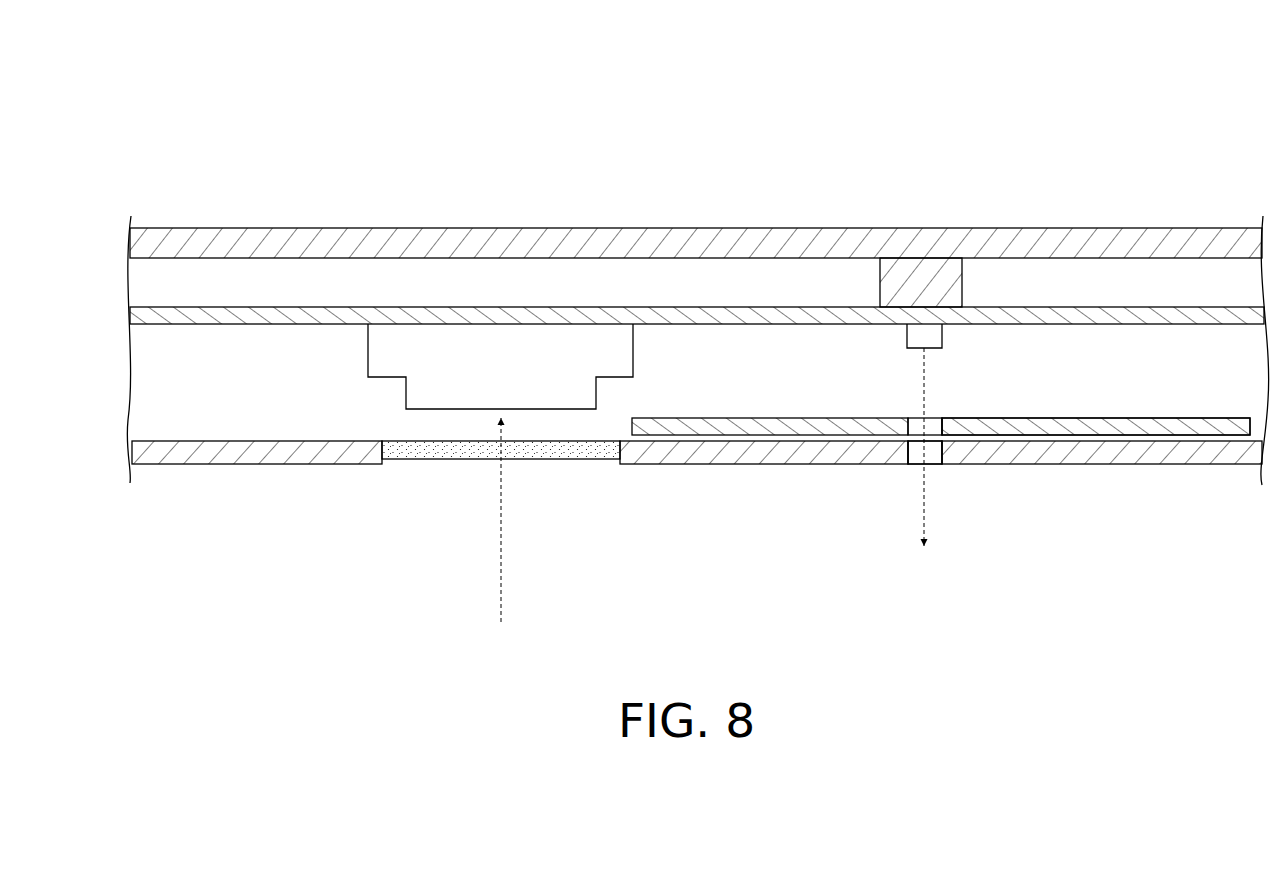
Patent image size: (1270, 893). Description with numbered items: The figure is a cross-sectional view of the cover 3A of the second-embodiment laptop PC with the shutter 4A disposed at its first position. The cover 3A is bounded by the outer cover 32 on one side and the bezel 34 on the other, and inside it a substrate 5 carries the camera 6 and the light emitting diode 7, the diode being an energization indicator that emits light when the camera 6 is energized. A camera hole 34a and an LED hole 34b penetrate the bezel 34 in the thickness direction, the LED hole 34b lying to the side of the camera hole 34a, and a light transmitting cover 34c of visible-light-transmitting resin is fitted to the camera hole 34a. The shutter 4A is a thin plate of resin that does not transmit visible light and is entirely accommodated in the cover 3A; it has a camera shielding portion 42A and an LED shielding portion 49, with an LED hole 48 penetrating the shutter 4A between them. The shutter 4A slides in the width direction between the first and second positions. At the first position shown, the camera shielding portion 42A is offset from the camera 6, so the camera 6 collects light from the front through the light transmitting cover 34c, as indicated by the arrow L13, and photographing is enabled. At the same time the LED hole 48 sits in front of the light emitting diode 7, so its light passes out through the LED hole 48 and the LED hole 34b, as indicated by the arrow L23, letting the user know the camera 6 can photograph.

The cover 3A is at (118, 157).
The outer cover 32 is at (1212, 227).
The substrate 5 is at (740, 325).
The camera 6 is at (380, 352).
The light emitting diode 7 is at (932, 333).
The camera shielding portion 42A is at (730, 416).
The LED hole 48 is at (935, 414).
The LED shielding portion 49 is at (1105, 417).
The shutter 4A is at (1170, 418).
The bezel 34 is at (257, 465).
The camera hole 34a is at (600, 466).
The LED hole 34b is at (940, 447).
The light transmitting cover 34c is at (437, 461).
The arrow L13 is at (497, 553).
The arrow L23 is at (918, 500).